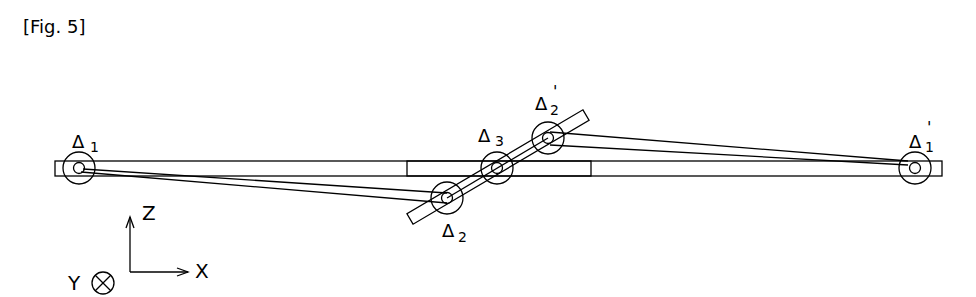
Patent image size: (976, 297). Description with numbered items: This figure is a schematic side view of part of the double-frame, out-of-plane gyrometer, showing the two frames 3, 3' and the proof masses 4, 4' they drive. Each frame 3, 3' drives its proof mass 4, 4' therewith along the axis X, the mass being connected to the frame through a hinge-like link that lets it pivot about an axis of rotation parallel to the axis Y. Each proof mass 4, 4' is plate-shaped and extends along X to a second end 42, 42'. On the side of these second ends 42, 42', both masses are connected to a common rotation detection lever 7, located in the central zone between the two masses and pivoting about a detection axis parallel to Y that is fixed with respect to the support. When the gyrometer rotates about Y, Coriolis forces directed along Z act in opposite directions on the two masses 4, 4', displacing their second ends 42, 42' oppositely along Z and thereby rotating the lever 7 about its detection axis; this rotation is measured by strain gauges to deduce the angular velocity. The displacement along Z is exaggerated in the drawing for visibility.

The frame 3 is at (323, 138).
The frame 3' is at (674, 187).
The proof mass 4 is at (264, 211).
The proof mass 4' is at (729, 125).
The rotation detection lever 7 is at (477, 189).
The second end 42 is at (488, 218).
The second end 42' is at (525, 114).